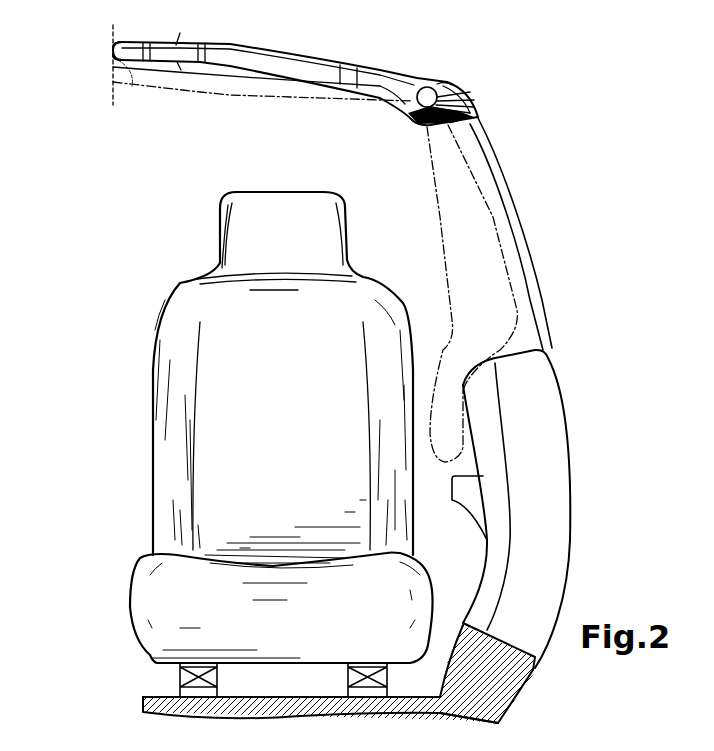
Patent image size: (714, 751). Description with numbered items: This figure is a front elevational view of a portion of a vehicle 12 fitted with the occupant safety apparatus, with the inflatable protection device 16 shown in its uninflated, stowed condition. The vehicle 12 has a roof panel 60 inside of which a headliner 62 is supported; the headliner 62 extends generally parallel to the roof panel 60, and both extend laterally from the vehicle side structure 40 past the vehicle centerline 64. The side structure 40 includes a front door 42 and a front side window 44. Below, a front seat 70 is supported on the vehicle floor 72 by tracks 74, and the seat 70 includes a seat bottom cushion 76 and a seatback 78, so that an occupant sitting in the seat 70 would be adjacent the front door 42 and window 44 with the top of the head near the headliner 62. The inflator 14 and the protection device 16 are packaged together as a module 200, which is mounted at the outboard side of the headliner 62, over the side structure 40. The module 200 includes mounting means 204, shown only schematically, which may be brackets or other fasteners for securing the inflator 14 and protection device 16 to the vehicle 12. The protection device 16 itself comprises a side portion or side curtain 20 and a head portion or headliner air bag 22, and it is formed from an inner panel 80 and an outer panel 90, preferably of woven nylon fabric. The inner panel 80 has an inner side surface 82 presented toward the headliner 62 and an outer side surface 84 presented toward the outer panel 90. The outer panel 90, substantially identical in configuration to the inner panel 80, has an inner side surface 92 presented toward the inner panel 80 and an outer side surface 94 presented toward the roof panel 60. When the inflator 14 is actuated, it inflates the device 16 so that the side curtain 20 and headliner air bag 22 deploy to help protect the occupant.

The module 200 is at (490, 69).
The mounting means 204 is at (447, 83).
The vehicle 12 is at (550, 202).
The inflator 14 is at (427, 87).
The inflatable vehicle occupant protection device 16 is at (412, 130).
The side curtain 20 is at (470, 100).
The headliner air bag 22 is at (252, 48).
The side structure 40 is at (596, 398).
The front door 42 is at (548, 538).
The front side window 44 is at (531, 283).
The roof panel 60 is at (233, 43).
The headliner 62 is at (230, 68).
The vehicle centerline 64 is at (113, 67).
The front seat 70 is at (118, 387).
The vehicle floor 72 is at (150, 710).
The tracks 74 is at (350, 677).
The seat bottom cushion 76 is at (160, 605).
The seatback 78 is at (173, 463).
The inner panel 80 is at (388, 92).
The inner side surface 82 is at (163, 62).
The outer side surface 84 is at (150, 58).
The outer panel 90 is at (412, 73).
The inner side surface 92 is at (135, 60).
The outer side surface 94 is at (133, 44).